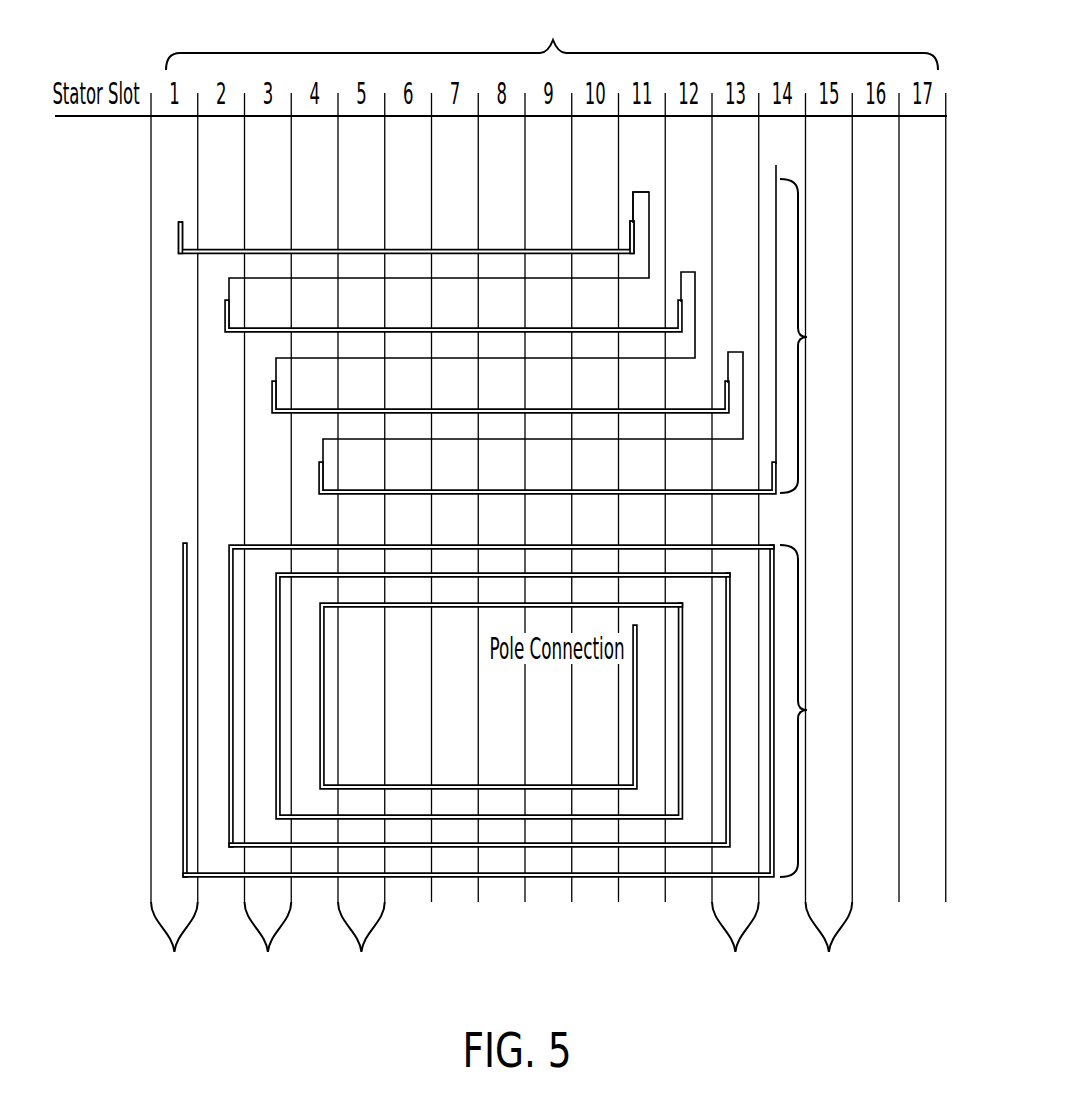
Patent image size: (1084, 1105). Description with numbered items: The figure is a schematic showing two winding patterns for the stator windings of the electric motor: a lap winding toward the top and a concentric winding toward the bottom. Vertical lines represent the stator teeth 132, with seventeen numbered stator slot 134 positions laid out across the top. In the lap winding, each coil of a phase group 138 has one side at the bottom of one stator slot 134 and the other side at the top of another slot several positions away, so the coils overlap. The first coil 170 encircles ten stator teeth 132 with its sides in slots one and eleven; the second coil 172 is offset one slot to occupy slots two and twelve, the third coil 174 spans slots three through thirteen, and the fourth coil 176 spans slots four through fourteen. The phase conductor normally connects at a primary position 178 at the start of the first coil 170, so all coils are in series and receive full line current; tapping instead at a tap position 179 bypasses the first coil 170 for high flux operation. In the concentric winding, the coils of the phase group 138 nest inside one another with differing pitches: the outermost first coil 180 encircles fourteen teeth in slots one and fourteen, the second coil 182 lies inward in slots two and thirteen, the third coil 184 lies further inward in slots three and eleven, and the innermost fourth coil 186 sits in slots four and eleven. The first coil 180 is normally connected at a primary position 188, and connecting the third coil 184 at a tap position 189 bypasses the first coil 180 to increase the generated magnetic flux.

The stator teeth 132 is at (501, 949).
The stator slot 134 is at (552, 36).
The phase group 138 is at (813, 528).
The first coil 170 is at (275, 248).
The second coil 172 is at (317, 327).
The third coil 174 is at (272, 397).
The fourth coil 176 is at (318, 479).
The primary position 178 is at (182, 222).
The tap position 179 is at (645, 192).
The first coil 180 is at (549, 878).
The second coil 182 is at (645, 848).
The third coil 184 is at (536, 819).
The fourth coil 186 is at (627, 790).
The primary position 188 is at (183, 542).
The tap position 189 is at (231, 543).